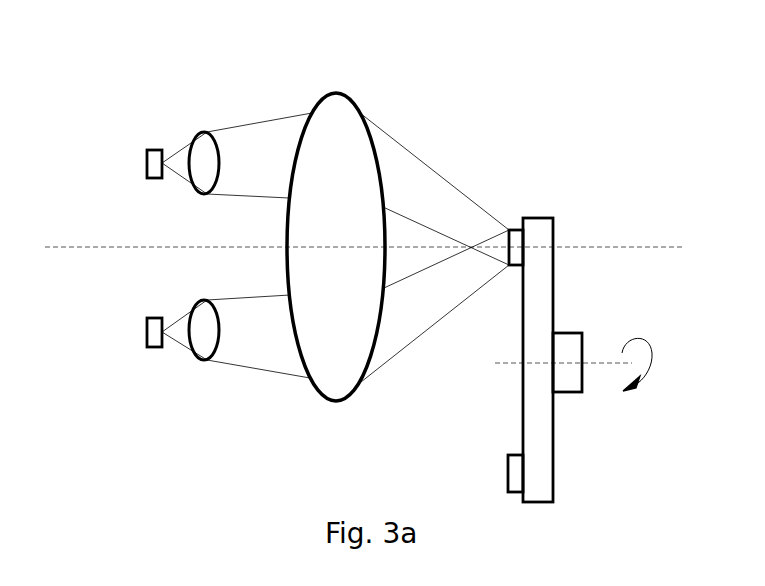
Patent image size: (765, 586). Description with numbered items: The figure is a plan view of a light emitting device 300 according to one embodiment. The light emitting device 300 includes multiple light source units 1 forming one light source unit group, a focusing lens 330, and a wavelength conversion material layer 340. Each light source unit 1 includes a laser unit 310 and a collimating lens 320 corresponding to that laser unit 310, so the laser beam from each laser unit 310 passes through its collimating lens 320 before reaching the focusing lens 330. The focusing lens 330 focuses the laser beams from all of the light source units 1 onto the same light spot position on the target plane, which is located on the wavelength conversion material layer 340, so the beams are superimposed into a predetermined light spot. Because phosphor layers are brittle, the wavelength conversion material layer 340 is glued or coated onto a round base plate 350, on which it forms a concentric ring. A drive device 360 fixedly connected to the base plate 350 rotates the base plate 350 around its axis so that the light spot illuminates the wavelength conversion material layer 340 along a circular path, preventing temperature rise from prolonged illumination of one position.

The light emitting device 300 is at (206, 61).
The light source unit 1 is at (151, 255).
The laser unit 310 is at (150, 157).
The collimating lens 320 is at (203, 143).
The focusing lens 330 is at (332, 390).
The wavelength conversion material layer 340 is at (515, 230).
The base plate 350 is at (547, 238).
The drive device 360 is at (567, 370).